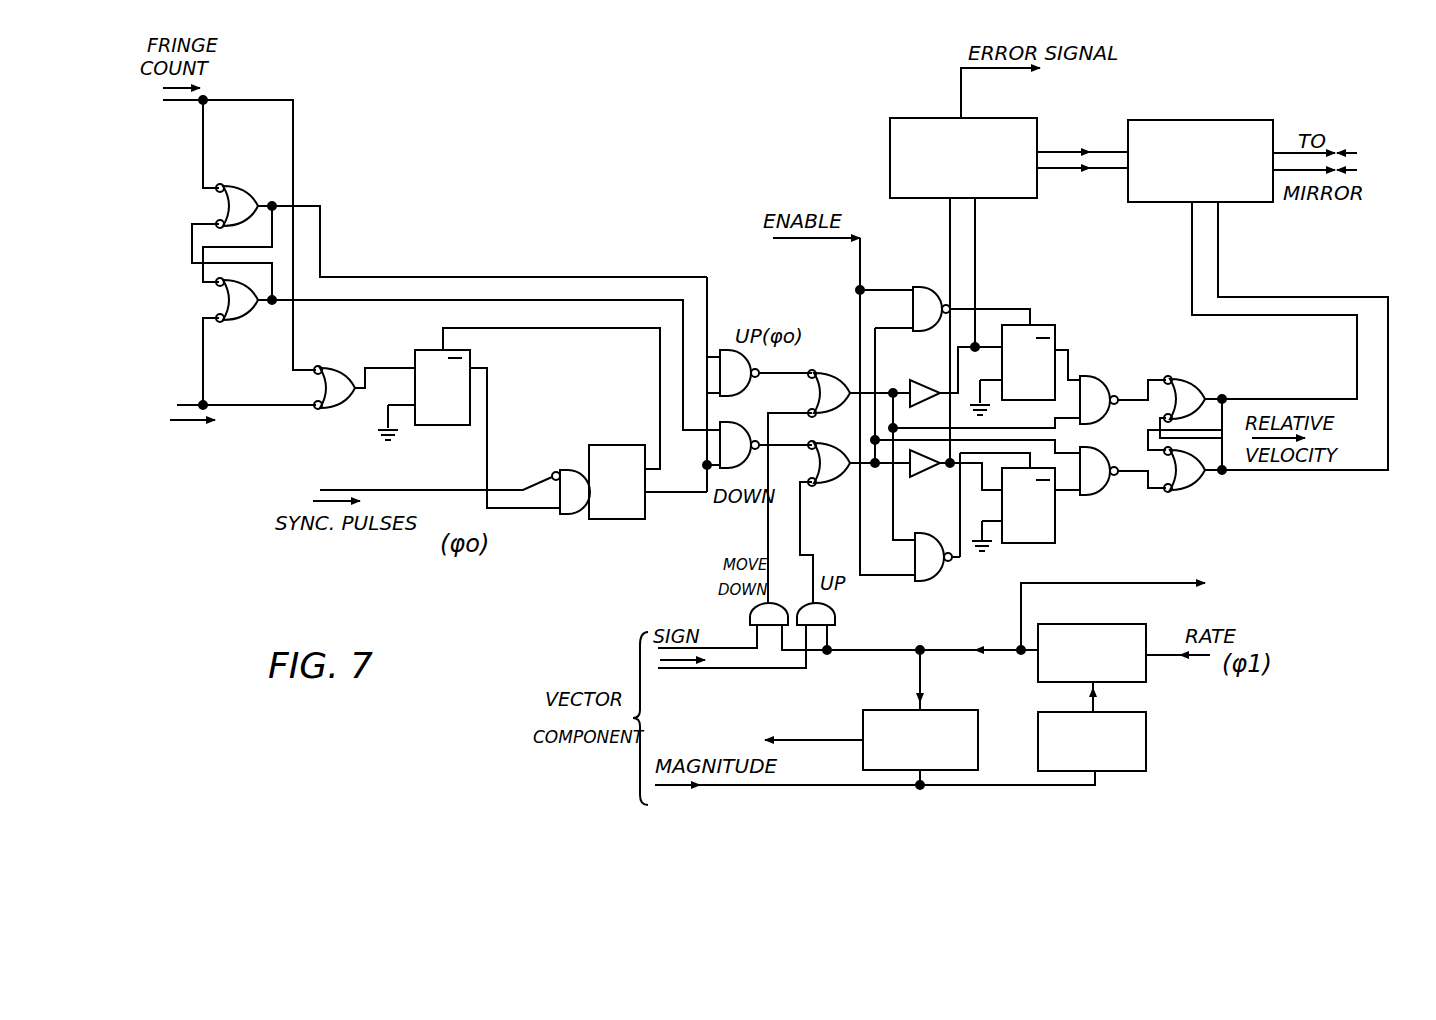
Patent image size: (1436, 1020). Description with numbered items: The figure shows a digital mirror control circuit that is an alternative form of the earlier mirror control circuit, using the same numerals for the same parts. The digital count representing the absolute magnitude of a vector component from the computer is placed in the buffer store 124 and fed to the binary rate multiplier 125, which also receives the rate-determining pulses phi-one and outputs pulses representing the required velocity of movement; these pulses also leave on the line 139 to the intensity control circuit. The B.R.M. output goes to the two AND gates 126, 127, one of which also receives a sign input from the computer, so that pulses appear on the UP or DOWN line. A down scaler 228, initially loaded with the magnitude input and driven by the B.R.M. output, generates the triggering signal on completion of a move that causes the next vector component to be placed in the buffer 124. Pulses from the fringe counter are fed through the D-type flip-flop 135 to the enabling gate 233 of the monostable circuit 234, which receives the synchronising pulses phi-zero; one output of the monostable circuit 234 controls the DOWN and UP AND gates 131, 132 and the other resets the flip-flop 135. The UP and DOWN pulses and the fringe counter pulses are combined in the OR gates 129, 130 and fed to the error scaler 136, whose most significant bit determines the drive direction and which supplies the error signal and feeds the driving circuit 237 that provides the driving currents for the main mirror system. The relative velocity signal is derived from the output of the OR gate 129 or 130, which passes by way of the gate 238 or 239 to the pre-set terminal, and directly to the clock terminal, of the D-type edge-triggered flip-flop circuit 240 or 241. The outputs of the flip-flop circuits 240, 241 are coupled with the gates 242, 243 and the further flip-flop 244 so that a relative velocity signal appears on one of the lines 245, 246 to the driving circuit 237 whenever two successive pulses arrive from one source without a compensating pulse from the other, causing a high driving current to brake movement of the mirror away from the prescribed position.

The buffer store 124 is at (1146, 740).
The binary rate multiplier (B.R.M.) 125 is at (1093, 624).
The UP AND gate 126 is at (836, 614).
The DOWN AND gate 127 is at (752, 614).
The OR gate 129 is at (818, 470).
The OR gate 130 is at (818, 395).
The DOWN AND gate 131 is at (748, 420).
The UP AND gate 132 is at (724, 346).
The D-type edge-triggered flip-flop 135 is at (445, 425).
The error scaler 136 is at (890, 150).
The line 139 is at (1143, 582).
The down scaler 228 is at (978, 740).
The enabling gate 233 is at (568, 470).
The monostable circuit 234 is at (636, 503).
The driving circuit 237 is at (1176, 204).
The gate 238 is at (925, 274).
The gate 239 is at (935, 580).
The D-type edge-triggered flip-flop circuit 240 is at (1052, 336).
The D-type edge-triggered flip-flop circuit 241 is at (1022, 545).
The gate 242 is at (1108, 370).
The gate 243 is at (1103, 442).
The flip-flop 244 is at (1208, 452).
The line 245 is at (1322, 400).
The line 246 is at (1340, 474).